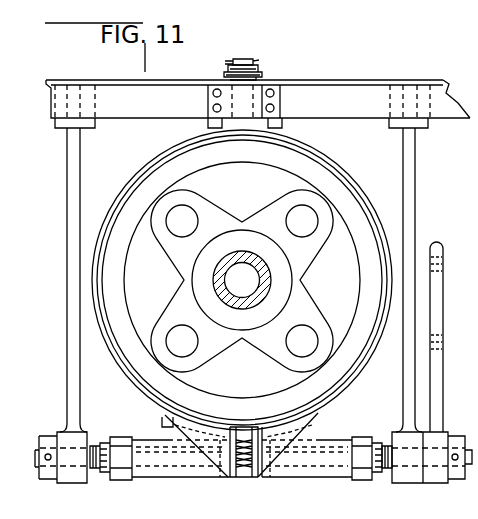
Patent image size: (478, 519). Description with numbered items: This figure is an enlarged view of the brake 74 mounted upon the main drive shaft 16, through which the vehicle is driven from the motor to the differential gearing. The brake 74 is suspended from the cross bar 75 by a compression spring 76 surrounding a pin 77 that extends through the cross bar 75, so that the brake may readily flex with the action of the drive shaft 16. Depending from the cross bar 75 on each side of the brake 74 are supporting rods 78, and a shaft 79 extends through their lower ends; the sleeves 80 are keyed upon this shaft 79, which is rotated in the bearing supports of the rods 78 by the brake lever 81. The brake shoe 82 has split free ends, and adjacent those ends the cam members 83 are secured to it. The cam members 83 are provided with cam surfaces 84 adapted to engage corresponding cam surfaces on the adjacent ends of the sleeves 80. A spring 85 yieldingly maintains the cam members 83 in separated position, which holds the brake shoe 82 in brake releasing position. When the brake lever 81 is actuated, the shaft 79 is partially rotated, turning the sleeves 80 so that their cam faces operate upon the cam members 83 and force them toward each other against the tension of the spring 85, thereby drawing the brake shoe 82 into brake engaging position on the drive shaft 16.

The main drive shaft 16 is at (247, 254).
The brake 74 is at (330, 172).
The cross bar 75 is at (322, 97).
The compression spring 76 is at (262, 80).
The pin 77 is at (256, 62).
The supporting rods 78 is at (81, 170).
The shaft 79 is at (387, 440).
The sleeves 80 is at (166, 470).
The brake lever 81 is at (444, 357).
The brake shoe 82 is at (334, 403).
The cam members 83 is at (227, 458).
The cam surfaces 84 is at (267, 457).
The spring 85 is at (238, 468).